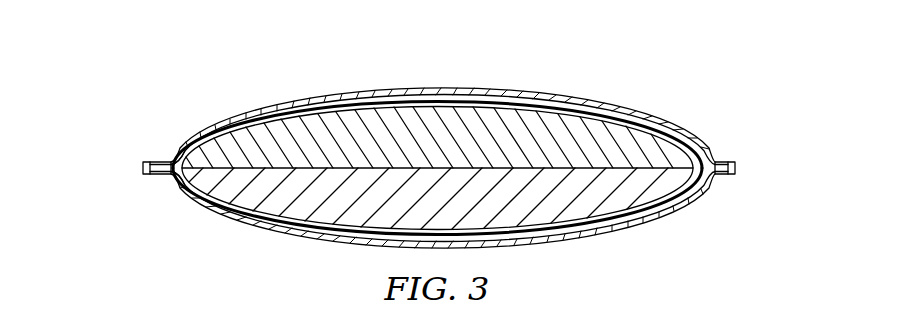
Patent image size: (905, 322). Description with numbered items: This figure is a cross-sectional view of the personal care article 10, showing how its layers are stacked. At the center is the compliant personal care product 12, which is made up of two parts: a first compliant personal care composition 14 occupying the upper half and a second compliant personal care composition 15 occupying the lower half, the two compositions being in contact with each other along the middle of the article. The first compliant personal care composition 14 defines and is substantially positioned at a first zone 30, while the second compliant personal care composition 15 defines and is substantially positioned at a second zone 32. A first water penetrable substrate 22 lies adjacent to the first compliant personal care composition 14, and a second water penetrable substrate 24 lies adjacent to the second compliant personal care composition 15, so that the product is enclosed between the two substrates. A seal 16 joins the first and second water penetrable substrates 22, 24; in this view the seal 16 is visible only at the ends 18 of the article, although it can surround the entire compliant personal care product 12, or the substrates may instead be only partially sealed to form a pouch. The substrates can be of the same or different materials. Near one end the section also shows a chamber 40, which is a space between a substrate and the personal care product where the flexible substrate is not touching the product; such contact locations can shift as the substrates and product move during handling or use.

The personal care article 10 is at (128, 108).
The compliant personal care product 12 is at (437, 177).
The first compliant personal care composition 14 is at (573, 122).
The second compliant personal care composition 15 is at (324, 220).
The seal 16 is at (727, 161).
The ends 18 is at (143, 176).
The first water penetrable substrate 22 is at (361, 90).
The second water penetrable substrate 24 is at (273, 238).
The first zone 30 is at (650, 90).
The second zone 32 is at (636, 250).
The chamber 40 is at (180, 177).